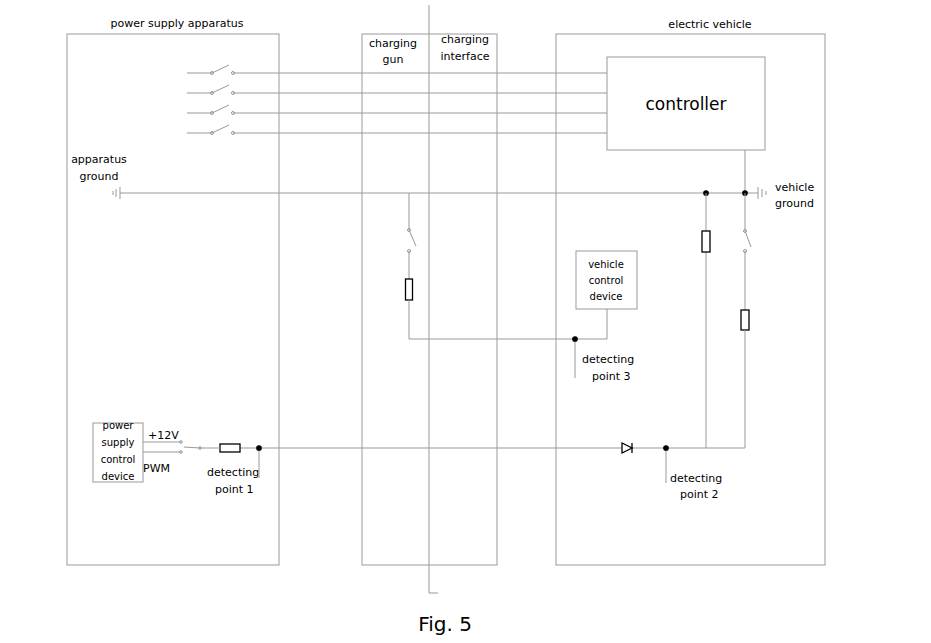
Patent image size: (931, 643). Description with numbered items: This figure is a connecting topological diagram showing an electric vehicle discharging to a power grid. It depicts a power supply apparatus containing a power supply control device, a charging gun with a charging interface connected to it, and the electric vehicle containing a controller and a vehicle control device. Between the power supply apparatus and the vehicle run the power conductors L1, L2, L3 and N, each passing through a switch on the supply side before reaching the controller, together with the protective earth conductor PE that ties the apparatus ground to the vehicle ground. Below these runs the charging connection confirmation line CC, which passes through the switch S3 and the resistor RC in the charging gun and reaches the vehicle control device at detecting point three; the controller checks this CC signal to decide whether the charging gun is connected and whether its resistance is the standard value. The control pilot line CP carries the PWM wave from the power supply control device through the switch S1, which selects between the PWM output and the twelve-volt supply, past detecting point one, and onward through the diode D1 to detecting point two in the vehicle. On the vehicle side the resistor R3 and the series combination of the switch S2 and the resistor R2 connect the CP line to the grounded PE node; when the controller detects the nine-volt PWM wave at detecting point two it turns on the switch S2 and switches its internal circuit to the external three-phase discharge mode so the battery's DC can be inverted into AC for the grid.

The phase line L1 is at (397, 68).
The phase line L2 is at (397, 88).
The phase line L3 is at (397, 108).
The neutral line N is at (397, 128).
The protective earth line PE is at (439, 174).
The CC signal CC is at (508, 343).
The CP signal CP is at (482, 456).
The switch S1 is at (181, 440).
The switch S2 is at (739, 251).
The switch S3 is at (398, 236).
The resistor RC is at (397, 309).
The resistor R2 is at (733, 379).
The resistor R3 is at (694, 320).
The diode D1 is at (626, 437).